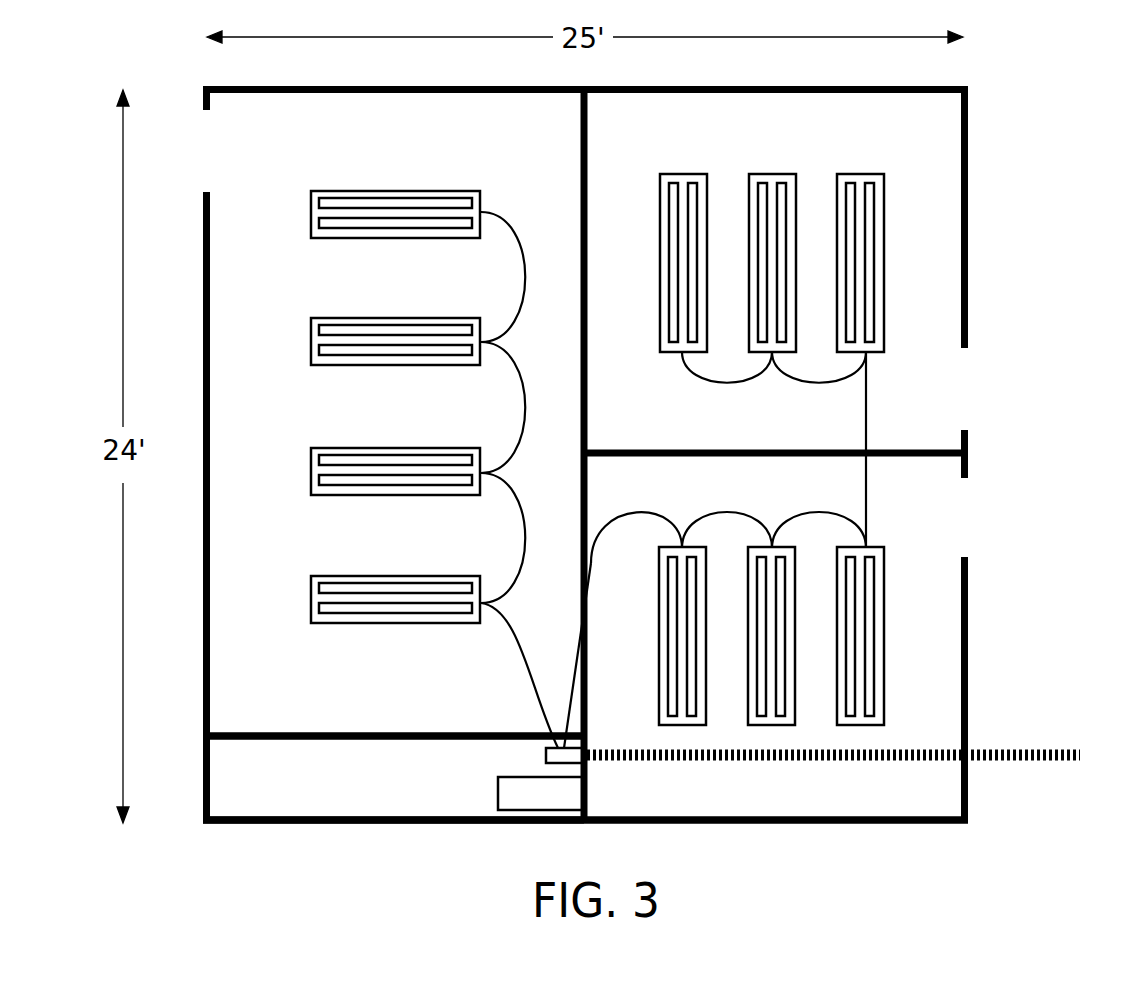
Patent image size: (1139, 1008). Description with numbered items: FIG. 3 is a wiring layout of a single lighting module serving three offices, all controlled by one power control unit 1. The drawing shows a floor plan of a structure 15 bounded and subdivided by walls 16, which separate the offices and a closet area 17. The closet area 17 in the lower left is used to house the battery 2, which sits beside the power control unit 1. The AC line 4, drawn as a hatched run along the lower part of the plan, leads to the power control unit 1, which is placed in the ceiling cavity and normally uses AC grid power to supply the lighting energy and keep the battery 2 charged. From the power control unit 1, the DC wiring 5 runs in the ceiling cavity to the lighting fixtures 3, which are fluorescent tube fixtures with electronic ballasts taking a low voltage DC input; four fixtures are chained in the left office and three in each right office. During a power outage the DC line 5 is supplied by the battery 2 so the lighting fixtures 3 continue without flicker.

The power control unit 1 is at (546, 755).
The battery 2 is at (497, 795).
The lighting fixtures 3 is at (419, 191).
The AC line 4 is at (1005, 750).
The DC line 5 is at (513, 633).
The building structure 15 is at (1035, 110).
The walls 16 is at (205, 607).
The closet area 17 is at (247, 790).